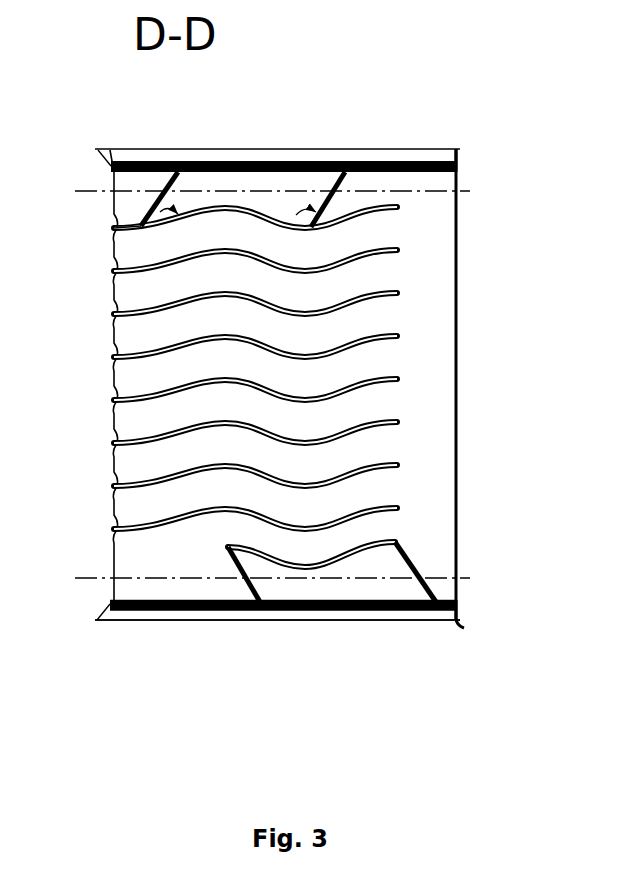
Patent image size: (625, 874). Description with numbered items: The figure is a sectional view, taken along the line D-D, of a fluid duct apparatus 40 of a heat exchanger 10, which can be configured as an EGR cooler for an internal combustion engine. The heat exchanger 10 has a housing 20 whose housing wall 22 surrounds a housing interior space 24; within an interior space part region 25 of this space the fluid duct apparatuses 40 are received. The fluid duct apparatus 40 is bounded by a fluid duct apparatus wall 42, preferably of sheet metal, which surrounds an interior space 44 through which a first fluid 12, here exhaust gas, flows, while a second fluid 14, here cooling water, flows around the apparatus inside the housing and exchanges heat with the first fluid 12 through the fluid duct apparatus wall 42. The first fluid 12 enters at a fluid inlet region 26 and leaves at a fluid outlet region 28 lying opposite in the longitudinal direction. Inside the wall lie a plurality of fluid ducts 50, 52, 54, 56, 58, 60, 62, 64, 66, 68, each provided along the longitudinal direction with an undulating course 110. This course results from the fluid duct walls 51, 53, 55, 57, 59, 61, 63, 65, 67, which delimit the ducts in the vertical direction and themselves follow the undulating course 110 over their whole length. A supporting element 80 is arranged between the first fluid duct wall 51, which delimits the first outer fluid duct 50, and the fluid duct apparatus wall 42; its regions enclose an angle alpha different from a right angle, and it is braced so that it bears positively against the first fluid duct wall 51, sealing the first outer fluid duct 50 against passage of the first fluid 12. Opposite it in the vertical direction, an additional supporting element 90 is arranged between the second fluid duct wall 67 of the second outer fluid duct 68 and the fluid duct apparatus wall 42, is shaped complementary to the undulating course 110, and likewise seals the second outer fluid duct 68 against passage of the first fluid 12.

The heat exchanger 10 is at (354, 143).
The first fluid 12 is at (433, 375).
The second fluid 14 is at (373, 616).
The housing 20 is at (355, 623).
The housing wall 22 is at (268, 623).
The housing interior space 24 is at (378, 155).
The interior space part region 25 is at (200, 608).
The fluid inlet region 26 is at (458, 385).
The fluid outlet region 28 is at (56, 178).
The fluid duct apparatus 40 is at (443, 166).
The fluid duct apparatus wall 42 is at (455, 621).
The interior space 44 is at (433, 455).
The first outer fluid duct 50 is at (392, 186).
The first fluid duct wall 51 is at (397, 207).
The fluid duct 52 is at (375, 232).
The fluid duct wall 53 is at (397, 250).
The fluid duct 54 is at (375, 275).
The fluid duct wall 55 is at (397, 293).
The fluid duct 56 is at (375, 320).
The fluid duct wall 57 is at (114, 340).
The fluid duct 58 is at (375, 363).
The fluid duct wall 59 is at (114, 385).
The fluid duct 60 is at (377, 410).
The fluid duct wall 61 is at (114, 438).
The fluid duct 62 is at (380, 450).
The fluid duct wall 63 is at (112, 488).
The fluid duct 64 is at (380, 496).
The fluid duct wall 65 is at (112, 533).
The fluid duct 66 is at (383, 528).
The second fluid duct wall 67 is at (112, 578).
The second outer fluid duct 68 is at (393, 571).
The supporting element 80 is at (333, 193).
The additional supporting element 90 is at (248, 592).
The undulating course 110 is at (143, 221).